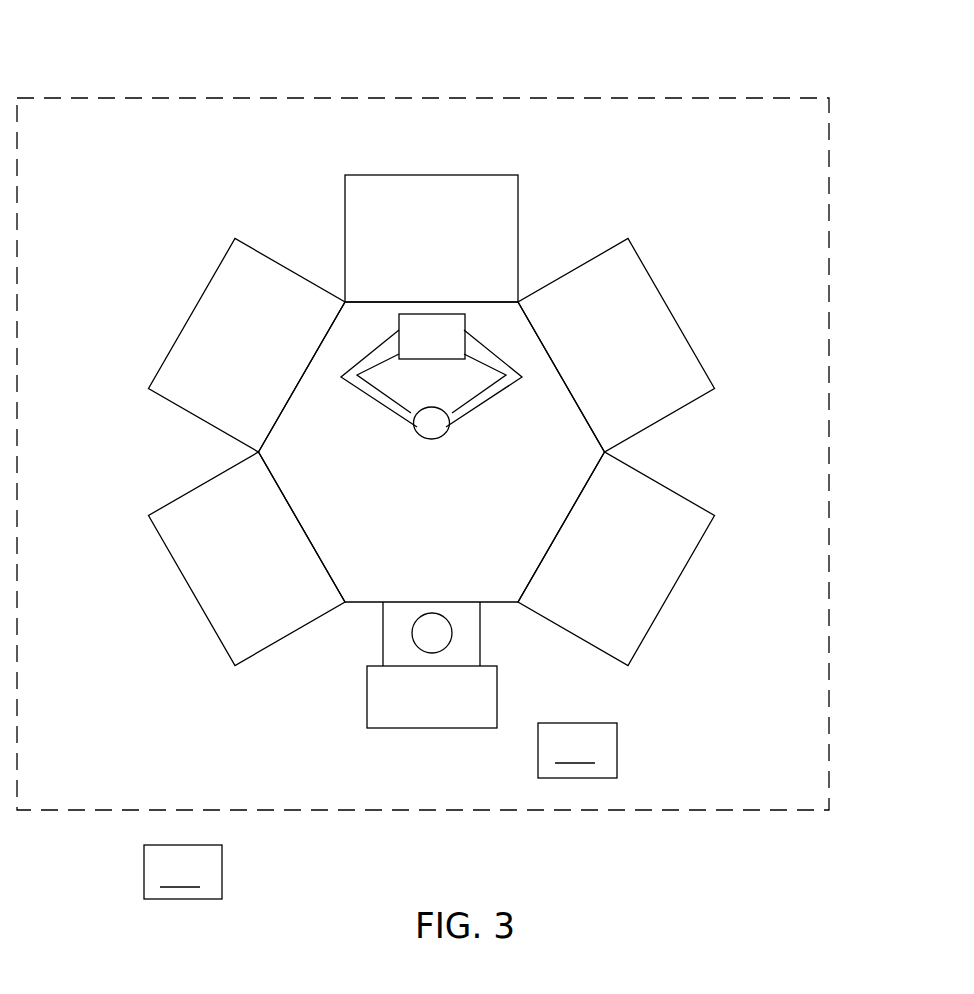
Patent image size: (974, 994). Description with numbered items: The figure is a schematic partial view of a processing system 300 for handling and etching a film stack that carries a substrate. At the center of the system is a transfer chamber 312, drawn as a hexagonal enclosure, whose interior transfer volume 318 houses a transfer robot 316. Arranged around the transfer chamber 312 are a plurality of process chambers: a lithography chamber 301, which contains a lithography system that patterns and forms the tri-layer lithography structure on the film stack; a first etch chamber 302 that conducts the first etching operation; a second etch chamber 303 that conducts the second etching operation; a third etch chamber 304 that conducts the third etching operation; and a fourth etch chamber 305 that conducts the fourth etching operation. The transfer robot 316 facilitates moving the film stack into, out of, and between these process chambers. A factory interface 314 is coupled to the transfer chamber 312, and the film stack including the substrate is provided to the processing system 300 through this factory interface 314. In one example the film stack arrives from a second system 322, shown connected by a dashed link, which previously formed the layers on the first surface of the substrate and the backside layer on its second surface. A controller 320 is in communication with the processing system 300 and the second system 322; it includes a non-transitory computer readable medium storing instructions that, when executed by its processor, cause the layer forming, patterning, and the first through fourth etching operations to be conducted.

The processing system 300 is at (864, 94).
The lithography chamber 301 is at (148, 515).
The first etch chamber 302 is at (185, 325).
The second etch chamber 303 is at (410, 175).
The third etch chamber 304 is at (668, 300).
The fourth etch chamber 305 is at (672, 487).
The transfer chamber 312 is at (358, 602).
The factory interface 314 is at (443, 728).
The transfer robot 316 is at (360, 392).
The transfer volume 318 is at (450, 552).
The controller 320 is at (563, 723).
The second system 322 is at (270, 813).